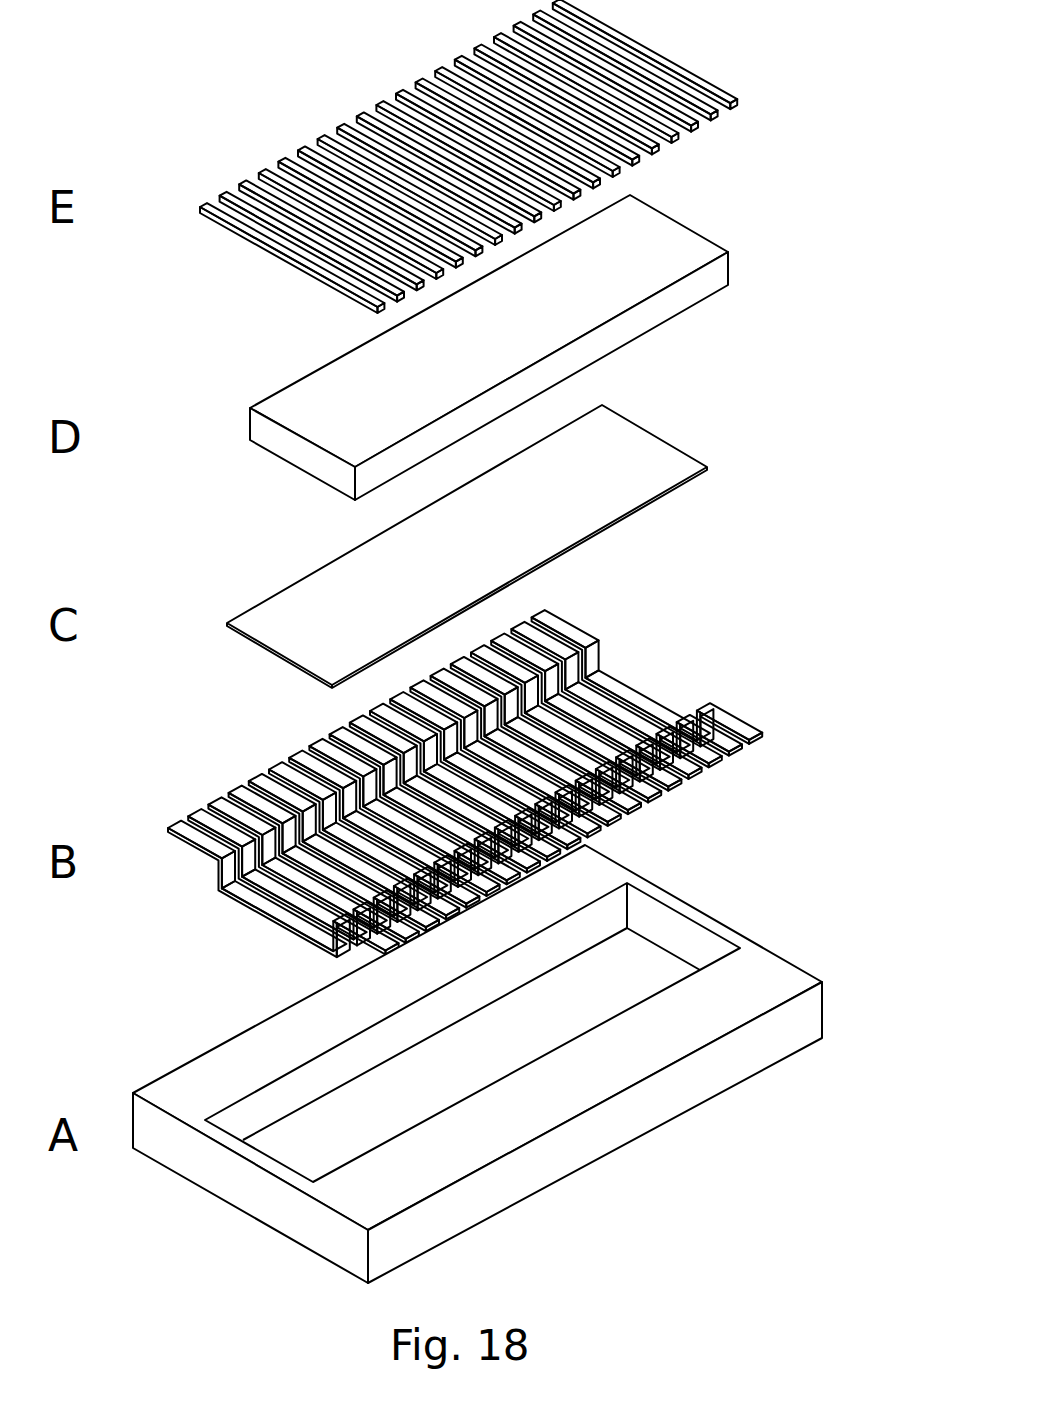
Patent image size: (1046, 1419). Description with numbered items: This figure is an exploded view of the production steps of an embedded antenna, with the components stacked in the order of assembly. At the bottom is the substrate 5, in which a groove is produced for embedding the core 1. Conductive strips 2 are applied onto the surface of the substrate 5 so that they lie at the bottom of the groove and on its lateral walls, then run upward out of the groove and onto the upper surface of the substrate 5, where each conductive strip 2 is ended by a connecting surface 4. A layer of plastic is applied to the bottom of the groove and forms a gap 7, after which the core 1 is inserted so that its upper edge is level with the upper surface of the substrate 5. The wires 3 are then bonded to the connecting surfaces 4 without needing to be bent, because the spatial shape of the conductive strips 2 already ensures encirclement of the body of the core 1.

The core 1 is at (667, 253).
The conductive strip 2 is at (640, 690).
The wire 3 is at (703, 80).
The connecting surface 4 is at (740, 702).
The substrate 5 is at (740, 988).
The gap 7 is at (643, 467).